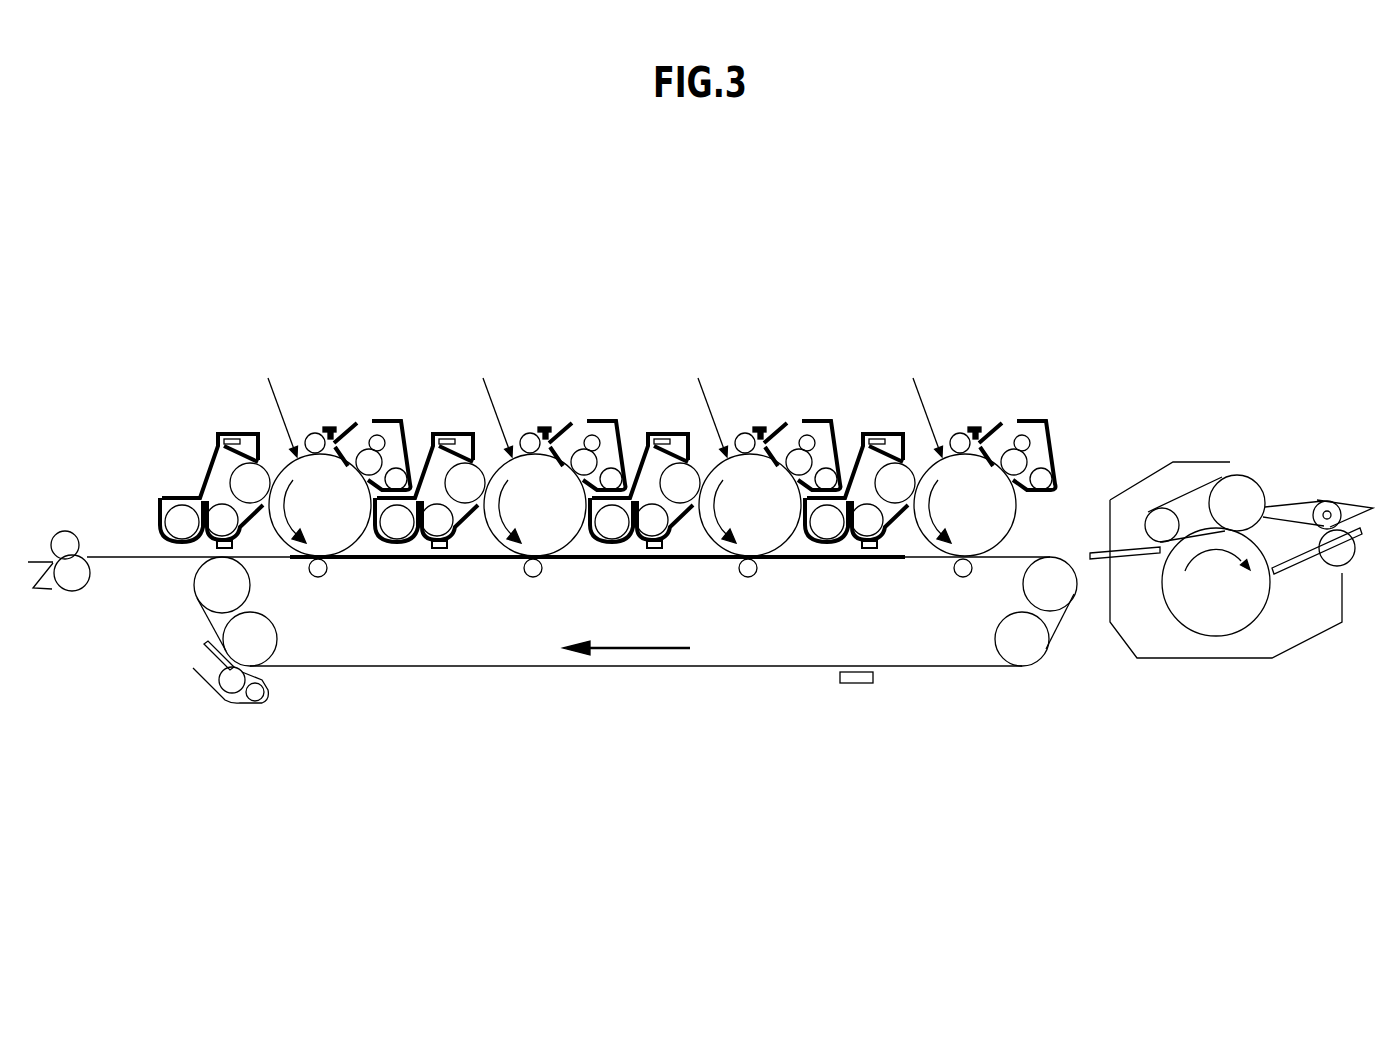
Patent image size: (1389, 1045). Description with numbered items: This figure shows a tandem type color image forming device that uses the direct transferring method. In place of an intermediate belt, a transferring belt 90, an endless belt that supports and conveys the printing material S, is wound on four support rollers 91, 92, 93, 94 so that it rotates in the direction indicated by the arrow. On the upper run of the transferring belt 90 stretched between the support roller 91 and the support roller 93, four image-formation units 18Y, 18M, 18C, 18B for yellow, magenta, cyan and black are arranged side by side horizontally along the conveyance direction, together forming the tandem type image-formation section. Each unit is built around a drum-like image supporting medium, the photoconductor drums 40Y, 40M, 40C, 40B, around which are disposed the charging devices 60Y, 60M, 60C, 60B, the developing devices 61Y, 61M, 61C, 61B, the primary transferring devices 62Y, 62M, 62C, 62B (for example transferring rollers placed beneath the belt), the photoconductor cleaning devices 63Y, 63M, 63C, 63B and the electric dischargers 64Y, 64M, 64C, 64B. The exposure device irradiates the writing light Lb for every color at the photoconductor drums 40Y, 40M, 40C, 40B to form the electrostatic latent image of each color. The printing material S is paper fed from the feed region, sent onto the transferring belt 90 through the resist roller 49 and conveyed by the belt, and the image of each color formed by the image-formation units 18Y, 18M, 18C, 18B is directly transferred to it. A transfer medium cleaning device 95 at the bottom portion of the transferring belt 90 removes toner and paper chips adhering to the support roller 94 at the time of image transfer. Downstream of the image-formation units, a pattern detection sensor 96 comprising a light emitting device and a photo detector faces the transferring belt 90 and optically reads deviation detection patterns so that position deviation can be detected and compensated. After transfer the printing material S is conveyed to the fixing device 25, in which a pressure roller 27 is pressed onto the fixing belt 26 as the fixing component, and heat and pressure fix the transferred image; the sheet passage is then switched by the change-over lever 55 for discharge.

The image-formation unit 18Y is at (330, 368).
The image-formation unit 18M is at (505, 457).
The image-formation unit 18C is at (719, 457).
The image-formation unit 18B is at (945, 448).
The photoconductor drum 40Y is at (353, 541).
The photoconductor drum 40M is at (556, 531).
The photoconductor drum 40C is at (771, 531).
The photoconductor drum 40B is at (999, 505).
The charging device 60Y is at (311, 433).
The charging device 60M is at (530, 417).
The charging device 60C is at (744, 417).
The charging device 60B is at (959, 417).
The developing device 61Y is at (238, 432).
The developing device 61M is at (430, 463).
The developing device 61C is at (645, 463).
The developing device 61B is at (860, 463).
The primary transferring device 62Y is at (320, 577).
The primary transferring device 62M is at (545, 597).
The primary transferring device 62C is at (756, 597).
The primary transferring device 62B is at (931, 588).
The photoconductor cleaning device 63Y is at (384, 418).
The photoconductor cleaning device 63M is at (603, 429).
The photoconductor cleaning device 63C is at (817, 429).
The photoconductor cleaning device 63B is at (1032, 429).
The electric discharger 64Y is at (336, 438).
The electric discharger 64M is at (576, 403).
The electric discharger 64C is at (791, 403).
The electric discharger 64B is at (1006, 403).
The writing light Lb is at (271, 384).
The printing material S is at (448, 560).
The transferring belt 90 is at (545, 668).
The support roller 91 is at (1053, 595).
The support roller 92 is at (1022, 650).
The support roller 93 is at (207, 588).
The support roller 94 is at (230, 635).
The transfer medium cleaning device 95 is at (216, 708).
The pattern detection sensor 96 is at (858, 687).
The resist roller 49 is at (70, 610).
The fixing device 25 is at (1181, 676).
The fixing belt 26 is at (1198, 488).
The pressure roller 27 is at (1243, 627).
The change-over lever 55 is at (1307, 503).